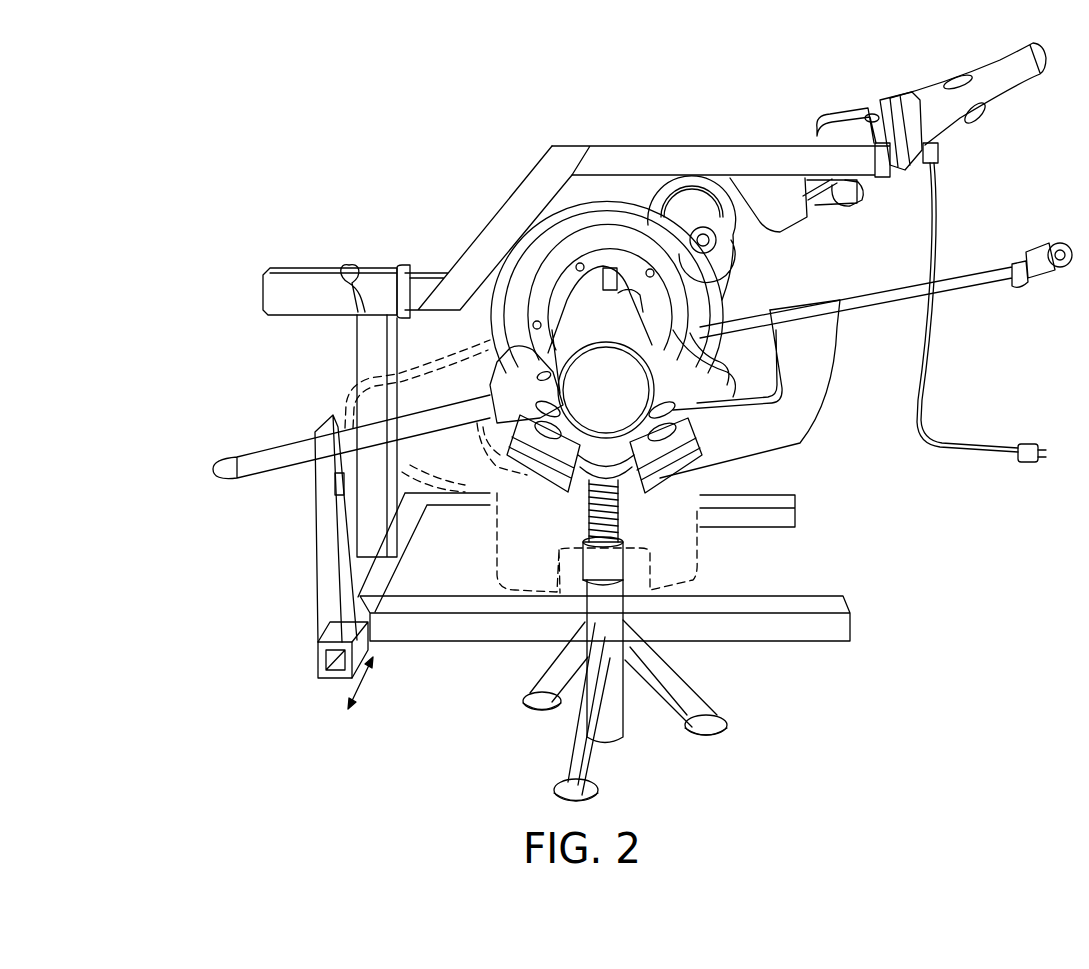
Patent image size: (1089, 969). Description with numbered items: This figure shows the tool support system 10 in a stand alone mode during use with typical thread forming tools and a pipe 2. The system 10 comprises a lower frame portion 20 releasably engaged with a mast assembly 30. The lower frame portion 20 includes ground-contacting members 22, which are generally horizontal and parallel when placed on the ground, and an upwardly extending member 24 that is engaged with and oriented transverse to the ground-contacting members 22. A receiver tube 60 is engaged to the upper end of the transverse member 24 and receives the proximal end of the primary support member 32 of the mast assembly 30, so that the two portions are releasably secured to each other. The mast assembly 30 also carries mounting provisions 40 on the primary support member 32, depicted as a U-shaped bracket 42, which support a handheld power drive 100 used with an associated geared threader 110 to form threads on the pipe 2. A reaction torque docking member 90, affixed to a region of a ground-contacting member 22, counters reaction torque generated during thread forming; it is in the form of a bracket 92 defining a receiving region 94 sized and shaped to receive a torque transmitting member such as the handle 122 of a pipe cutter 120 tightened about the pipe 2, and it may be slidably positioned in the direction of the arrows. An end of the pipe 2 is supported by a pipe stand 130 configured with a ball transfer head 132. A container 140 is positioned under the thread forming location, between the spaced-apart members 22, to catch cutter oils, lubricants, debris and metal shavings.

The tool support system 10 is at (155, 203).
The pipe 2 is at (562, 300).
The lower frame portion 20 is at (574, 505).
The ground-contacting members 22 is at (790, 517).
The upwardly extending member 24 is at (357, 350).
The mast assembly 30 is at (626, 204).
The primary support member 32 is at (410, 275).
The mounting provisions 40 is at (842, 136).
The U-shaped bracket 42 is at (848, 125).
The receiver tube 60 is at (290, 285).
The reaction torque docking member 90 is at (296, 546).
The bracket 92 is at (296, 546).
The receiving region 94 is at (333, 487).
The handheld power drive 100 is at (916, 112).
The geared threader 110 is at (520, 295).
The pipe cutter 120 is at (800, 425).
The handle 122 is at (270, 457).
The pipe stand 130 is at (543, 683).
The ball transfer head 132 is at (590, 485).
The container 140 is at (697, 577).